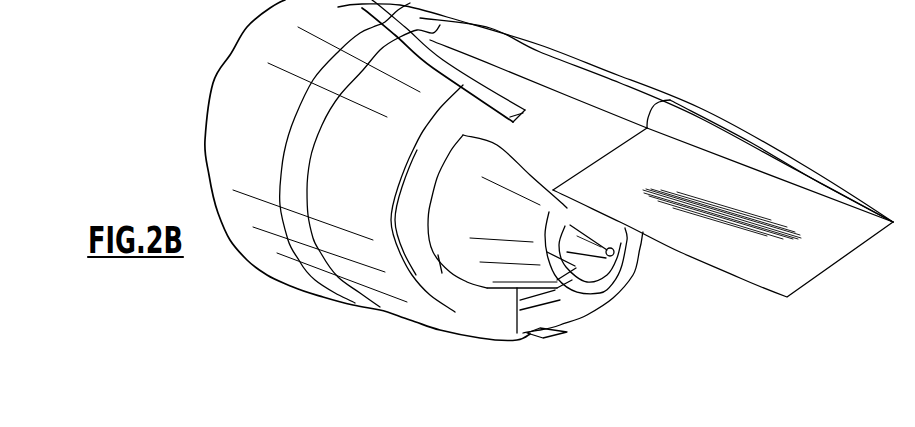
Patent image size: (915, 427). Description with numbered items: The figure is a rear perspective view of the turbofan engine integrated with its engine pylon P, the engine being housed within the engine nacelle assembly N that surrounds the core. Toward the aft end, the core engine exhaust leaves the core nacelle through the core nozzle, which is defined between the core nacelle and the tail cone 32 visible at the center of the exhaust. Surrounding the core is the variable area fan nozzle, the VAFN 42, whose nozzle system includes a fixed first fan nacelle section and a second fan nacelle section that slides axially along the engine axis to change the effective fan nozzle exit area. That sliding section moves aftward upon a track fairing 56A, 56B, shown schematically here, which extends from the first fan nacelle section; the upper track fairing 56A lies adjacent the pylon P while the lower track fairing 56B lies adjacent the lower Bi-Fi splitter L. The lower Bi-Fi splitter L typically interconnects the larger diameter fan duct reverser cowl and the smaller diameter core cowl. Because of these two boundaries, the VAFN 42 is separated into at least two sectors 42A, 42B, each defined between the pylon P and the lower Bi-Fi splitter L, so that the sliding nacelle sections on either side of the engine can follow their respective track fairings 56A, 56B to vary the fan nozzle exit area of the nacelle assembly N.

The variable area fan nozzle (VAFN) 42 is at (226, 153).
The sector 42A is at (427, 285).
The sector 42B is at (578, 297).
The track fairing 56A is at (490, 97).
The track fairing 56B is at (548, 338).
The tail cone 32 is at (613, 257).
The engine pylon P is at (697, 137).
The lower Bi-Fi splitter L is at (490, 303).
The engine nacelle assembly N is at (250, 270).